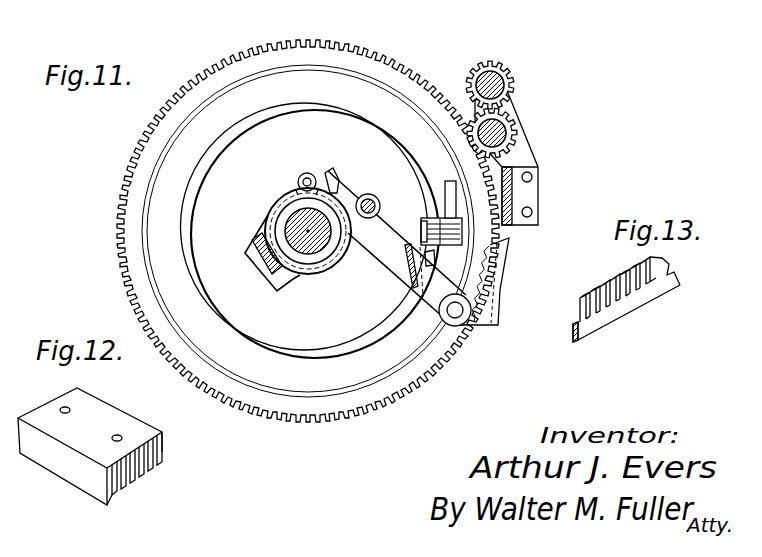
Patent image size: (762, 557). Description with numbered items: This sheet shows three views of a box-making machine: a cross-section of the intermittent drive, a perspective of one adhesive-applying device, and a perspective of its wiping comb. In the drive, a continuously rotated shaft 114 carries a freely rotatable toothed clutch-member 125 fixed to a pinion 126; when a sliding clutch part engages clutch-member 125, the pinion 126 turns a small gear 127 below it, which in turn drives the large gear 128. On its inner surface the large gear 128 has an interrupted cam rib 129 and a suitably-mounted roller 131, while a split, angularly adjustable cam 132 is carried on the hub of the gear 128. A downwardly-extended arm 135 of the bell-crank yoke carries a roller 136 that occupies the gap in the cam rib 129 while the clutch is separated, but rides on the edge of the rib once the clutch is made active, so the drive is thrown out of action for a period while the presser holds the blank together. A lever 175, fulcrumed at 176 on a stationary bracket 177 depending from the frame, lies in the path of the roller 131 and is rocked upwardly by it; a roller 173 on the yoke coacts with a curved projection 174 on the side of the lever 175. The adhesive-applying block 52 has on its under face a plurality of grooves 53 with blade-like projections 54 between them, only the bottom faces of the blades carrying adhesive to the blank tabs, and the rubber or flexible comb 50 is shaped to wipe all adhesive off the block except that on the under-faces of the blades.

In FIG. 11, the large gear 128 is at (370, 48).
In FIG. 11, the interrupted cam rib 129 is at (328, 108).
In FIG. 11, the roller 131 is at (305, 172).
In FIG. 11, the split cam 132 is at (282, 292).
In FIG. 11, the downwardly-extended arm 135 is at (447, 185).
In FIG. 11, the roller 136 is at (430, 222).
In FIG. 11, the roller 173 is at (368, 194).
In FIG. 11, the curved projection 174 is at (333, 168).
In FIG. 11, the lever 175 is at (370, 240).
In FIG. 11, the fulcrum 176 is at (457, 327).
In FIG. 11, the stationary bracket 177 is at (500, 262).
In FIG. 11, the shaft 114 is at (481, 70).
In FIG. 11, the toothed clutch-member 125 is at (513, 101).
In FIG. 11, the pinion 126 is at (505, 72).
In FIG. 11, the small gear 127 is at (518, 135).
In FIG. 13, the flexible comb 50 is at (620, 308).
In FIG. 12, the adhesive-applying block 52 is at (118, 418).
In FIG. 12, the grooves 53 is at (152, 466).
In FIG. 12, the blade-like projections 54 is at (128, 495).